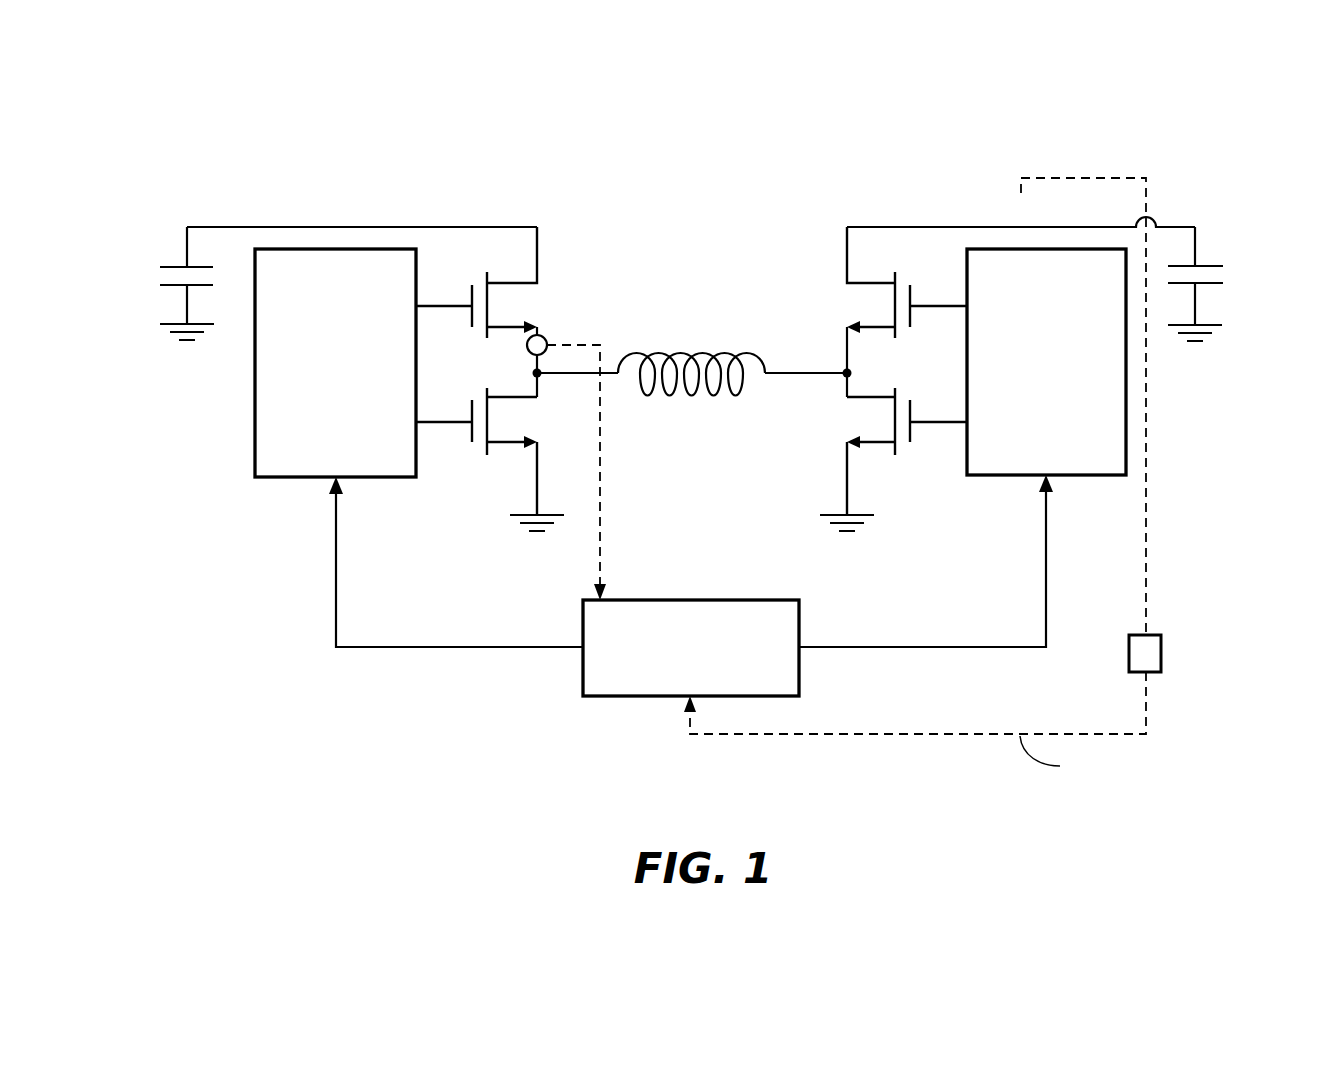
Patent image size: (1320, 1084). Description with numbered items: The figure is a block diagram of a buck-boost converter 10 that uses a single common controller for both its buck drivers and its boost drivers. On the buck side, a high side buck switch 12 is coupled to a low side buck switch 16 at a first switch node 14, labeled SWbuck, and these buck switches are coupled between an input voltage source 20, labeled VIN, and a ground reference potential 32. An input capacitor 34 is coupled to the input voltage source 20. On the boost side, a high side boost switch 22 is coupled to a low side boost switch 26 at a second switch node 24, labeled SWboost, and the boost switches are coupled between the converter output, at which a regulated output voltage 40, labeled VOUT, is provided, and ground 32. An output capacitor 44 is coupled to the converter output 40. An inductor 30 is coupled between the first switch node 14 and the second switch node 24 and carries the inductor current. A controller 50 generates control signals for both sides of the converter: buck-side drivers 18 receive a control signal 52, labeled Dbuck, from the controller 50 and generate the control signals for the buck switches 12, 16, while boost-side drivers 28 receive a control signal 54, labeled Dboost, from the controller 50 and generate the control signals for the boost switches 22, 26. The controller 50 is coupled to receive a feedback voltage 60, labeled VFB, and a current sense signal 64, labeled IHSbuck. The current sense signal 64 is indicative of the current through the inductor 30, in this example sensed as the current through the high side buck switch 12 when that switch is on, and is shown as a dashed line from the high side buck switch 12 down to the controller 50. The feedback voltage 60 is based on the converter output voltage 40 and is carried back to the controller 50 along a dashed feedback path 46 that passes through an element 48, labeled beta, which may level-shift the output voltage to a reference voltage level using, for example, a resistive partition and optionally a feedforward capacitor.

The buck-boost converter 10 is at (1142, 144).
The high side buck switch 12 is at (530, 302).
The first switch node 14 is at (541, 377).
The low side buck switch 16 is at (530, 422).
The buck-side drivers 18 is at (335, 363).
The input voltage source 20 is at (494, 226).
The high side boost switch 22 is at (852, 303).
The second switch node 24 is at (843, 377).
The low side boost switch 26 is at (852, 422).
The boost-side drivers 28 is at (1046, 362).
The inductor 30 is at (725, 350).
The ground reference potential 32 is at (536, 478).
The input capacitor 34 is at (170, 258).
The regulated output voltage 40 is at (888, 226).
The output capacitor 44 is at (1212, 258).
The feedback sense line 46 is at (1148, 410).
The element 48 is at (1163, 652).
The controller 50 is at (691, 648).
The control signal Dbuck 52 is at (382, 645).
The control signal Dboost 54 is at (1000, 645).
The feedback voltage 60 is at (852, 736).
The current sense signal 64 is at (605, 470).